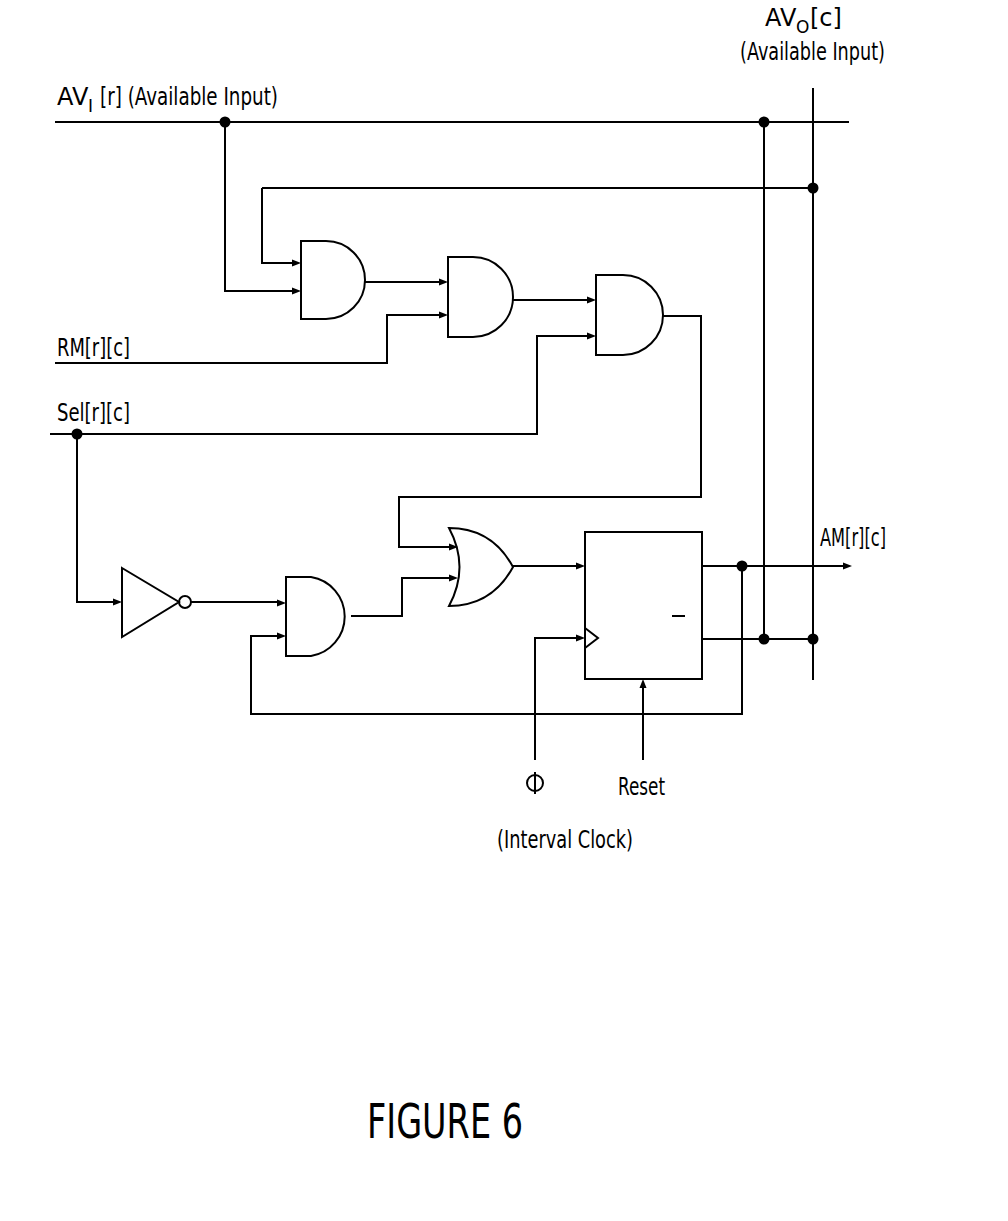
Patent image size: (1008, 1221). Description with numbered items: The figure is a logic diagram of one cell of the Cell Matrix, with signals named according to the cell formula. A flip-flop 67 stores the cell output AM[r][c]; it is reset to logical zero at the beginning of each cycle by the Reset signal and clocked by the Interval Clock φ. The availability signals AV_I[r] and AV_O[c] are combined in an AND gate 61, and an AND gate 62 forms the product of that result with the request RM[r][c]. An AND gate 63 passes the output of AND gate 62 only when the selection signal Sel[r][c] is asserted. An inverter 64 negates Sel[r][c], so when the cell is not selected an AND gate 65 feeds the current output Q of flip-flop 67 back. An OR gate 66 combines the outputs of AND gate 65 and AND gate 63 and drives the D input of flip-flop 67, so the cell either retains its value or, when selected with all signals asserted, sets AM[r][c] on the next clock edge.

The AND gate 61 is at (327, 250).
The AND gate 62 is at (487, 266).
The AND gate 63 is at (639, 283).
The inverter 64 is at (145, 582).
The AND gate 65 is at (327, 649).
The OR gate 66 is at (498, 542).
The flip-flop 67 is at (585, 612).